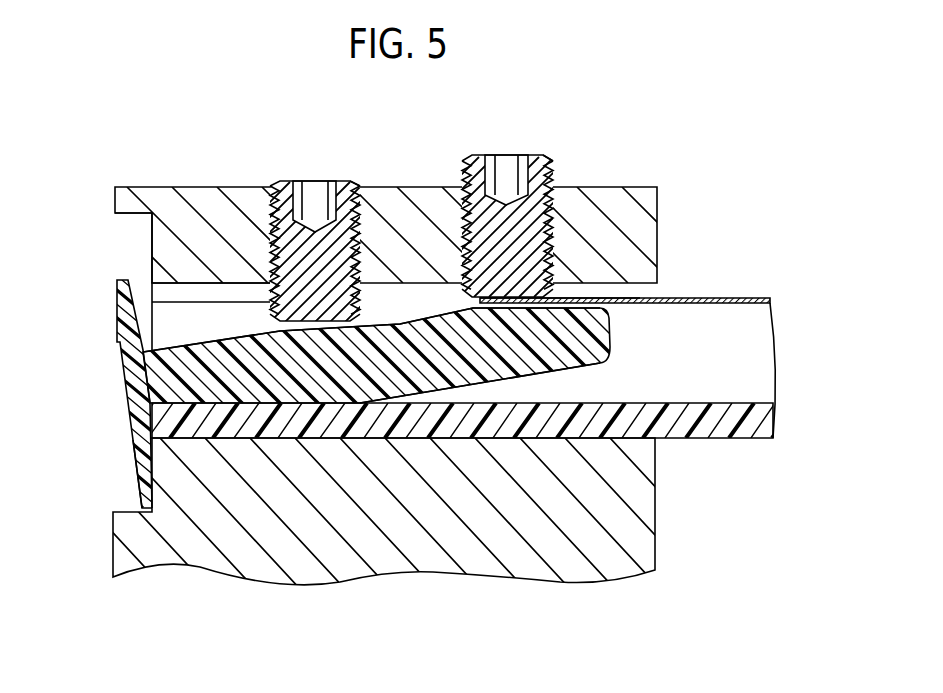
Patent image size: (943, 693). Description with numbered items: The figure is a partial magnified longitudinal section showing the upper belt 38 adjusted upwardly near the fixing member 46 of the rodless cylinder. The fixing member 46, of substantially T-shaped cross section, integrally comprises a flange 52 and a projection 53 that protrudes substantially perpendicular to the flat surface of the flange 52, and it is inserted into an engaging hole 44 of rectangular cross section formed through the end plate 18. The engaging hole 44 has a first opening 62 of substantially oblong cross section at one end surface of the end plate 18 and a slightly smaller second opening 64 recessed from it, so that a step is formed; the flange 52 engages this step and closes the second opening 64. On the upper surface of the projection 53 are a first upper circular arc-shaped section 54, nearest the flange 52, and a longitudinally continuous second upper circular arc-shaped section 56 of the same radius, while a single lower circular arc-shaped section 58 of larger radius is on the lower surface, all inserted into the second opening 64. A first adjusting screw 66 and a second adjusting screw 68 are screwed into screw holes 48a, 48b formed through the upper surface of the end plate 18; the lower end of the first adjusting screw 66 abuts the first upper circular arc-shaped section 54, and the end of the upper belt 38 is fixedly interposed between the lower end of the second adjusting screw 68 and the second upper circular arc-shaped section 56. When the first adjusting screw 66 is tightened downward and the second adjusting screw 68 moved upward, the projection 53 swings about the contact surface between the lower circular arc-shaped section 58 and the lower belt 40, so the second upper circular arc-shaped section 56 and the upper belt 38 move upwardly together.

The end plate 18 is at (632, 523).
The upper belt 38 is at (753, 300).
The lower belt 40 is at (763, 420).
The engaging hole 44 is at (645, 293).
The fixing member 46 is at (123, 381).
The screw hole 48a is at (295, 207).
The screw hole 48b is at (538, 215).
The flange 52 is at (140, 468).
The projection 53 is at (378, 366).
The first upper circular arc-shaped section 54 is at (222, 212).
The second upper circular arc-shaped section 56 is at (463, 308).
The lower circular arc-shaped section 58 is at (491, 386).
The first opening 62 is at (138, 217).
The second opening 64 is at (165, 292).
The first adjusting screw 66 is at (353, 181).
The second adjusting screw 68 is at (539, 168).